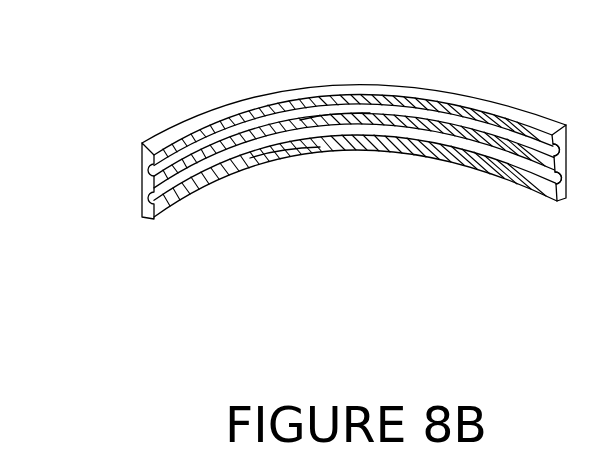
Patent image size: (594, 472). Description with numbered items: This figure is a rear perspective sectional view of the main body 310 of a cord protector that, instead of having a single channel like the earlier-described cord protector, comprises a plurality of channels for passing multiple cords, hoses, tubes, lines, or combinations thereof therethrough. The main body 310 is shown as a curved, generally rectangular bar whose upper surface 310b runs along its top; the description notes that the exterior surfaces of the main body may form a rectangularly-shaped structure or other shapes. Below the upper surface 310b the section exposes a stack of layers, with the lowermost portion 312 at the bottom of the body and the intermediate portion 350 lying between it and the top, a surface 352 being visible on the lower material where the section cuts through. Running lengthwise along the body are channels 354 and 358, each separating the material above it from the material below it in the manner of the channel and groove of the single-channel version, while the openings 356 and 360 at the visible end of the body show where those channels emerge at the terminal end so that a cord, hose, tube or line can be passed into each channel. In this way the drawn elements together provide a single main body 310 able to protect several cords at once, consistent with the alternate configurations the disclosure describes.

The curved member 310 is at (392, 65).
The second portion of curved member 310b is at (218, 115).
The bottom layer 312 is at (146, 212).
The middle layer 350 is at (336, 113).
The lower layer top surface 352 is at (283, 147).
The first groove 354 is at (148, 172).
The first groove end 356 is at (555, 150).
The second groove 358 is at (148, 200).
The second groove end 360 is at (555, 180).